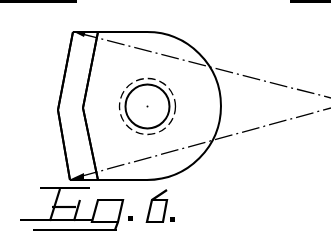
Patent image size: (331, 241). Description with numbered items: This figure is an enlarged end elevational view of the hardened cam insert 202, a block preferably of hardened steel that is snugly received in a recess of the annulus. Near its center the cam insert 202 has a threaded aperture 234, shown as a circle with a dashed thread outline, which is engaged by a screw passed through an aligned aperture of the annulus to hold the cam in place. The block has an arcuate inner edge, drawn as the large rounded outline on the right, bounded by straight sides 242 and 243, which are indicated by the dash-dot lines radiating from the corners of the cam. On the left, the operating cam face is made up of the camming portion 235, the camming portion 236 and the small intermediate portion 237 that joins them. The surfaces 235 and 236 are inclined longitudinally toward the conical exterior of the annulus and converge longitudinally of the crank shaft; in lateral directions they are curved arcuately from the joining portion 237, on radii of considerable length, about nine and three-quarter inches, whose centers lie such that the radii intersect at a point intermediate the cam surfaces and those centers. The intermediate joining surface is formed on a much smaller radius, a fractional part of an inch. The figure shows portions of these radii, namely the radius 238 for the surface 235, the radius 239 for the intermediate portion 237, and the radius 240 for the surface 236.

The hardened cam insert 202 is at (221, 113).
The threaded aperture 234 is at (170, 99).
The camming portion 235 is at (66, 67).
The camming portion 236 is at (62, 127).
The intermediate portion 237 is at (65, 106).
The radius 238 is at (265, 81).
The radius 239 is at (84, 105).
The radius 240 is at (272, 126).
The straight side 242 is at (233, 73).
The straight side 243 is at (223, 140).